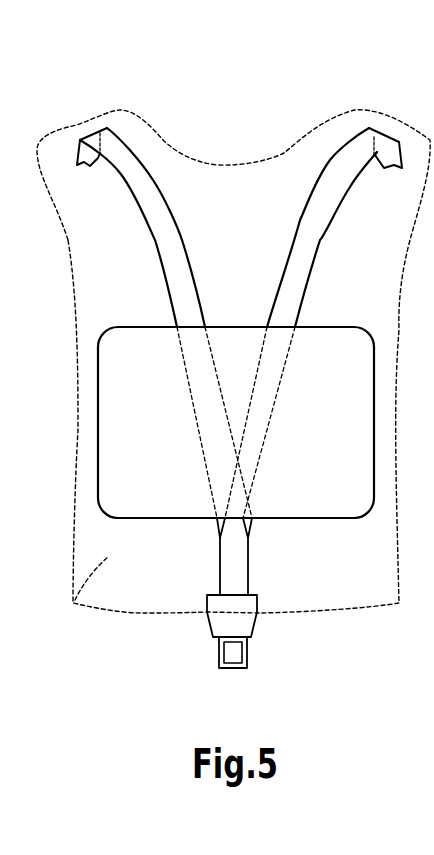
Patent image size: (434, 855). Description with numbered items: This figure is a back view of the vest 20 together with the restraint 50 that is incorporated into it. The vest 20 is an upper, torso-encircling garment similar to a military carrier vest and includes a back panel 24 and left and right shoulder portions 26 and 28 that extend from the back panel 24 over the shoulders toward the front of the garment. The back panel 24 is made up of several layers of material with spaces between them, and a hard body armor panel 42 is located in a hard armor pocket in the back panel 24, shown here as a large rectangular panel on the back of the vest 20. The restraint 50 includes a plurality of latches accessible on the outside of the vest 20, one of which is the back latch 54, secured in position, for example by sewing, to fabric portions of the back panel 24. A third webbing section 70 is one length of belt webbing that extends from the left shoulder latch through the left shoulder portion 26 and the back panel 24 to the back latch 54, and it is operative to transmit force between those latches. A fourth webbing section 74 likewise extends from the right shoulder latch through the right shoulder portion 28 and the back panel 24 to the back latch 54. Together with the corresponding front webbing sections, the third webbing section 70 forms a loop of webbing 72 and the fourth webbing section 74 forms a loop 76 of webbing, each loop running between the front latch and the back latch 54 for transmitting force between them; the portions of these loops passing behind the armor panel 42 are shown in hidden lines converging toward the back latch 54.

The vest 20 is at (142, 613).
The back panel 24 is at (76, 606).
The left shoulder portion 26 is at (65, 130).
The right shoulder portion 28 is at (398, 128).
The hard body armor panel 42 is at (98, 490).
The restraint 50 is at (249, 562).
The back latch 54 is at (245, 663).
The third webbing section 70 is at (160, 265).
The loop of webbing 72 is at (198, 409).
The fourth webbing section 74 is at (315, 262).
The loop of webbing 76 is at (272, 411).